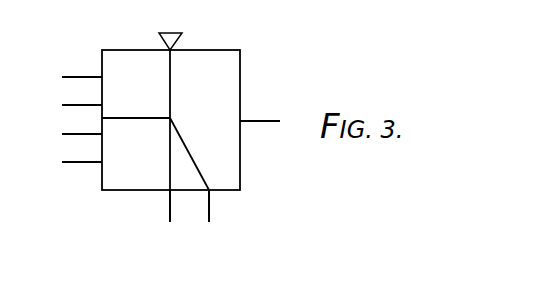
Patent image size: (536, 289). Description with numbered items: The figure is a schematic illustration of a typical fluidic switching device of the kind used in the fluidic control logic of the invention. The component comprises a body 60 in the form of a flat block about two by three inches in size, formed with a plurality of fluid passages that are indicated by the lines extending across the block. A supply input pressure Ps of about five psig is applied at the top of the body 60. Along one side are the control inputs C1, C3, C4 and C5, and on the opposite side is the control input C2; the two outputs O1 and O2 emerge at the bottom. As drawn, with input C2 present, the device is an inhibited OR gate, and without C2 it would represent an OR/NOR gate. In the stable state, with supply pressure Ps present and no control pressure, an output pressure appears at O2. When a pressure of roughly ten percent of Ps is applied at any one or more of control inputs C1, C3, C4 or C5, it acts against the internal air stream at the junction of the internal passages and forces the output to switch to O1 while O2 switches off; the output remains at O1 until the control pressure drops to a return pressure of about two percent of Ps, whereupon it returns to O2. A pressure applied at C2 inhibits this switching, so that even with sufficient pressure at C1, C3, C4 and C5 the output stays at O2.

The body 60 is at (240, 85).
The input pressure Ps is at (170, 30).
The control input C1 is at (70, 78).
The inhibiting control input C2 is at (268, 123).
The control input C3 is at (70, 106).
The control input C4 is at (70, 135).
The control input C5 is at (70, 163).
The output O1 is at (211, 217).
The output O2 is at (168, 217).